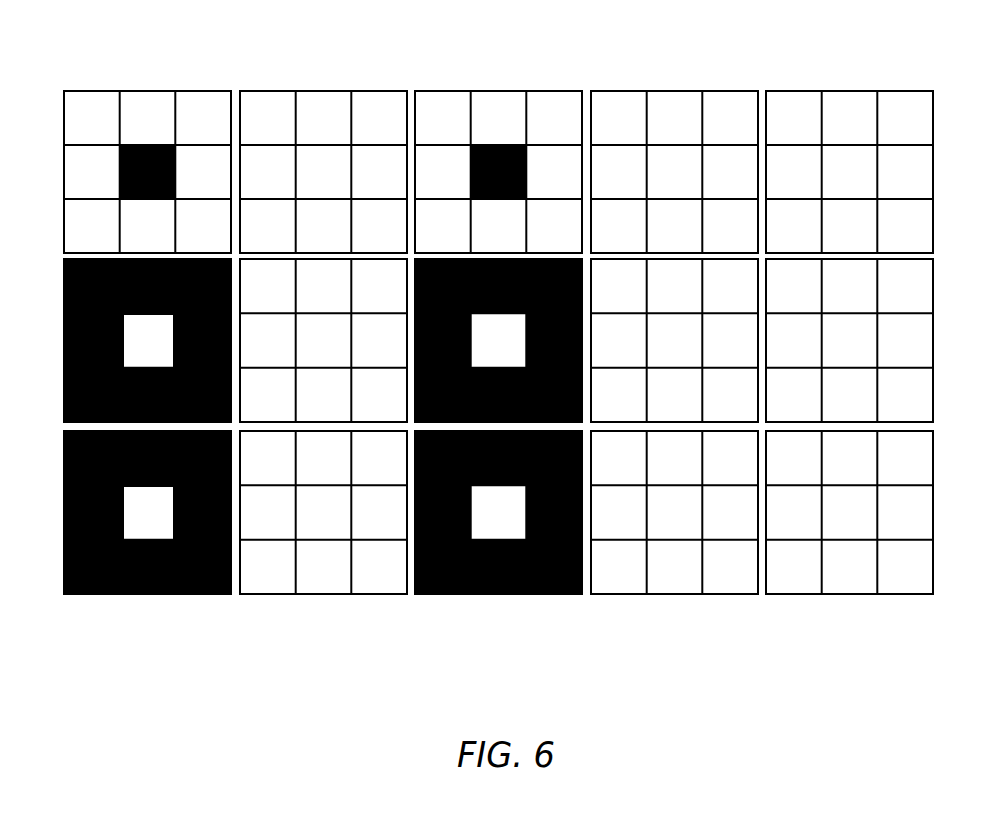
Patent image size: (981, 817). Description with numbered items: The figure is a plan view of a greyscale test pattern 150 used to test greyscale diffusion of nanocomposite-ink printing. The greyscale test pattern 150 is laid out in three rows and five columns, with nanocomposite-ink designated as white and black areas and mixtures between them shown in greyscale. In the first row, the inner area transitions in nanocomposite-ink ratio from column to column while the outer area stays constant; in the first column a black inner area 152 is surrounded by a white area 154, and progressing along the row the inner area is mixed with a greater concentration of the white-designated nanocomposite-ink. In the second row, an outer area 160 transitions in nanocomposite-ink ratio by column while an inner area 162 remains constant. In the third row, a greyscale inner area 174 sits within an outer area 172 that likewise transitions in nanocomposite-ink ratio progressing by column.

The greyscale test pattern 150 is at (475, 373).
The black inner area 152 is at (119, 163).
The white area 154 is at (498, 139).
The outer area 160 is at (475, 340).
The inner area 162 is at (168, 353).
The outer area 172 is at (498, 547).
The greyscale inner area 174 is at (168, 525).